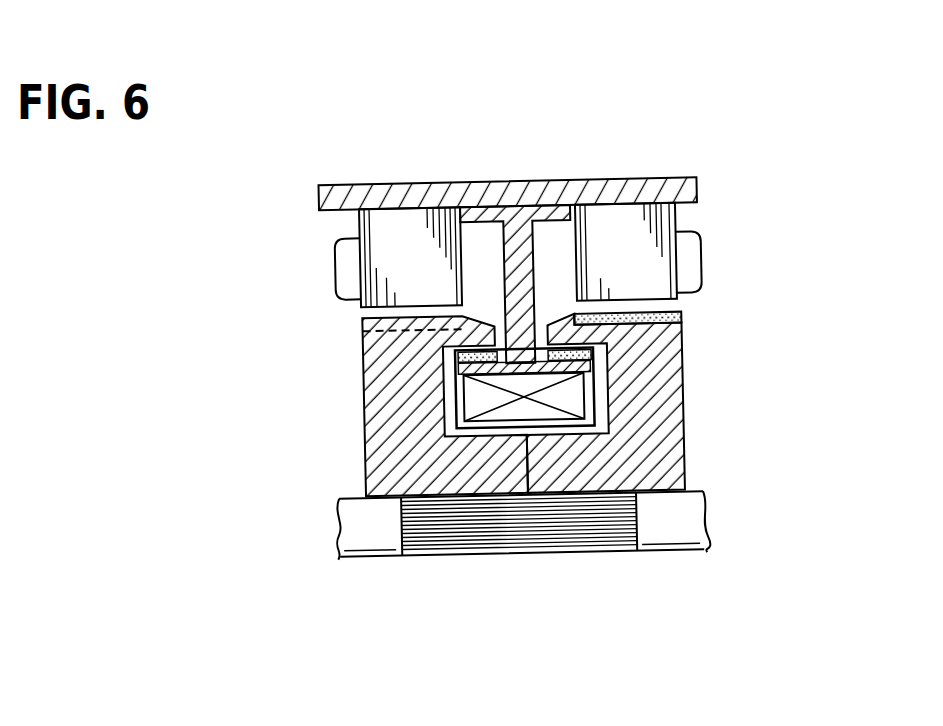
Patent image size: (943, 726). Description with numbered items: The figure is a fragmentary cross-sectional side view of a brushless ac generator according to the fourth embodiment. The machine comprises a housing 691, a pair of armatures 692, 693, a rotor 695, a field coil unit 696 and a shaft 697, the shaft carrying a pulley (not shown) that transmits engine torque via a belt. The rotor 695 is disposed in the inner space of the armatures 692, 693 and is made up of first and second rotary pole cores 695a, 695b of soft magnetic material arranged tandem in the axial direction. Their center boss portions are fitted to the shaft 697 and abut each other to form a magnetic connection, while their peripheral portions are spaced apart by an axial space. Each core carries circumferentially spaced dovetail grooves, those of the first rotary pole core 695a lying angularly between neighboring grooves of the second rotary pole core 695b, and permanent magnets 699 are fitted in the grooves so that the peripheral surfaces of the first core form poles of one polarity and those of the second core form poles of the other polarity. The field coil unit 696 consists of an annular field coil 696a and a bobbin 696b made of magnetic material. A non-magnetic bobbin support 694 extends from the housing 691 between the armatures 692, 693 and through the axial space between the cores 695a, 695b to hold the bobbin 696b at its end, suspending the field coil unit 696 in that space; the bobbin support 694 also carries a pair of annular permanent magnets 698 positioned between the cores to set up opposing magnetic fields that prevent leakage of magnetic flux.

The housing 691 is at (322, 203).
The armature 692 is at (385, 226).
The armature 693 is at (640, 230).
The bobbin support 694 is at (520, 262).
The rotor 695 is at (485, 384).
The first rotary pole core 695a is at (363, 341).
The second rotary pole core 695b is at (667, 422).
The field coil unit 696 is at (455, 366).
The annular field coil 696a is at (462, 377).
The bobbin 696b is at (443, 406).
The shaft 697 is at (550, 535).
The annular permanent magnets 698 is at (498, 340).
The permanent magnets 699 is at (680, 316).